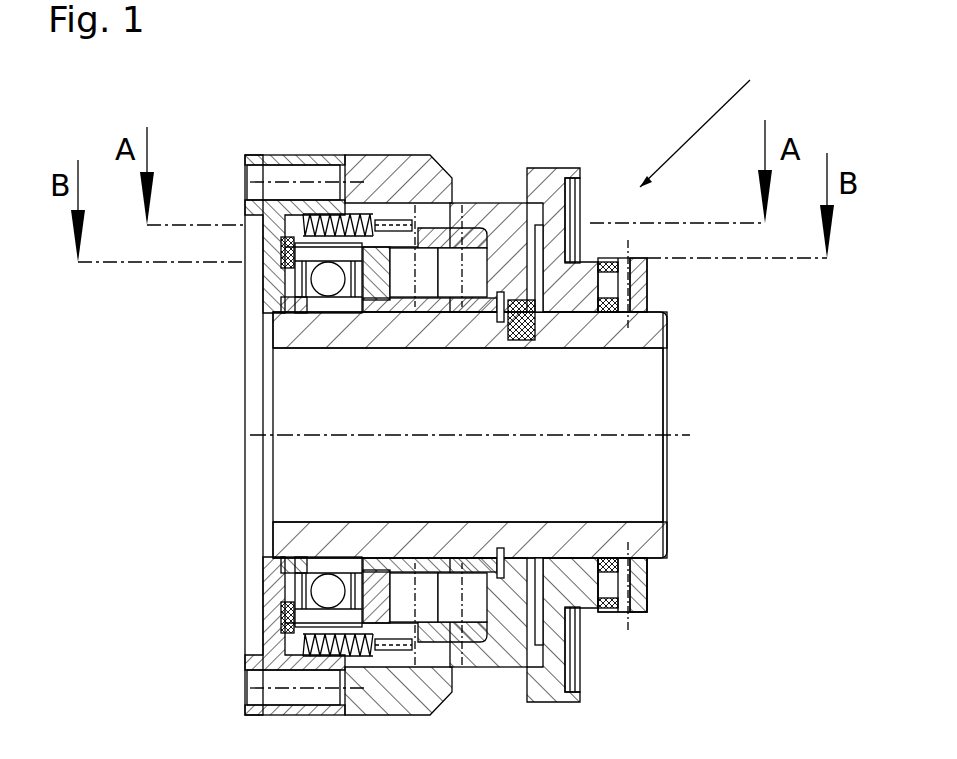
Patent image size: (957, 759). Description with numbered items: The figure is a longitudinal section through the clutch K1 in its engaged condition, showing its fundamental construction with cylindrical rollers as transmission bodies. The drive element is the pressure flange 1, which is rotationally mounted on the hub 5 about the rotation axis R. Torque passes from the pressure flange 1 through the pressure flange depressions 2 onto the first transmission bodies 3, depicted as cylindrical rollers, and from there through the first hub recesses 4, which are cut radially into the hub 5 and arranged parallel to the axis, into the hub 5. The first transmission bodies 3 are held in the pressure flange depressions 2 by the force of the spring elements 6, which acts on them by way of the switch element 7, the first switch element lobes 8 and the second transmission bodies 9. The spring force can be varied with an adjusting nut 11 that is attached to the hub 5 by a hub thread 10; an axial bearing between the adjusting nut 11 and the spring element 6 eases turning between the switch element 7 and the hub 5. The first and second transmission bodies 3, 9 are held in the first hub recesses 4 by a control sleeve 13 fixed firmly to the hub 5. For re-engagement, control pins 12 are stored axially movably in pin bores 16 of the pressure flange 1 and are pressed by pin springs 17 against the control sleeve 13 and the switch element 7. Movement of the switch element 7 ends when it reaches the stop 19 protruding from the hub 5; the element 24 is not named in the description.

The pressure flange 1 is at (315, 645).
The pressure flange depressions 2 is at (338, 583).
The first transmission bodies 3 is at (407, 270).
The first hub recesses 4 is at (437, 236).
The hub 5 is at (315, 328).
The spring elements 6 is at (568, 217).
The switch element 7 is at (530, 213).
The first switch element lobes 8 is at (492, 278).
The second transmission bodies 9 is at (478, 275).
The hub thread 10 is at (648, 328).
The adjusting nut 11 is at (647, 283).
The control pins 12 is at (385, 215).
The control sleeve 13 is at (453, 240).
The pin bores 16 is at (320, 210).
The pin springs 17 is at (305, 205).
The stop 19 is at (540, 336).
The locking ring 24 is at (647, 567).
The rotation axis R is at (297, 435).
The clutch K1 is at (800, 80).